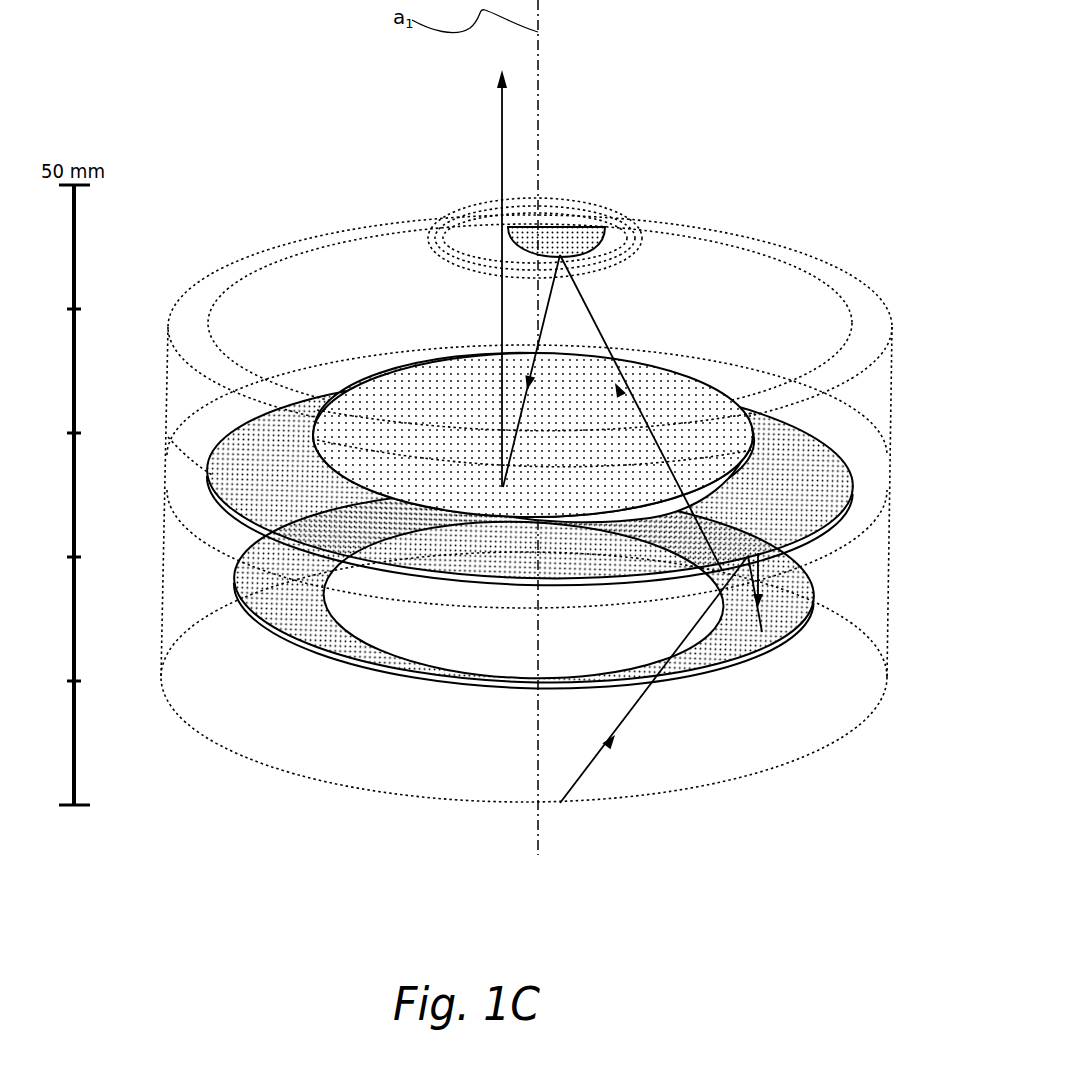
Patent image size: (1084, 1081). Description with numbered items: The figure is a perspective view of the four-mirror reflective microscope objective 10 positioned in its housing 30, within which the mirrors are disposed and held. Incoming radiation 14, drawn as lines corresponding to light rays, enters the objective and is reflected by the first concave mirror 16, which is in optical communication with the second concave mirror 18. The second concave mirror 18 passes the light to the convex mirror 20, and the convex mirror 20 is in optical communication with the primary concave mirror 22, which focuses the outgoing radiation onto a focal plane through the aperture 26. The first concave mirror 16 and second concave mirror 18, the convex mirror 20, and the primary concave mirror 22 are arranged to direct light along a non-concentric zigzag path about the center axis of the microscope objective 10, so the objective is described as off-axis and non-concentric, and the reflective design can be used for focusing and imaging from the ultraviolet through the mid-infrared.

The reflective microscope objective 10 is at (722, 222).
The incoming radiation 14 is at (600, 757).
The first concave mirror 16 is at (807, 463).
The second concave mirror 18 is at (788, 637).
The convex mirror 20 is at (591, 228).
The primary concave mirror 22 is at (318, 393).
The aperture 26 is at (497, 222).
The housing 30 is at (321, 232).